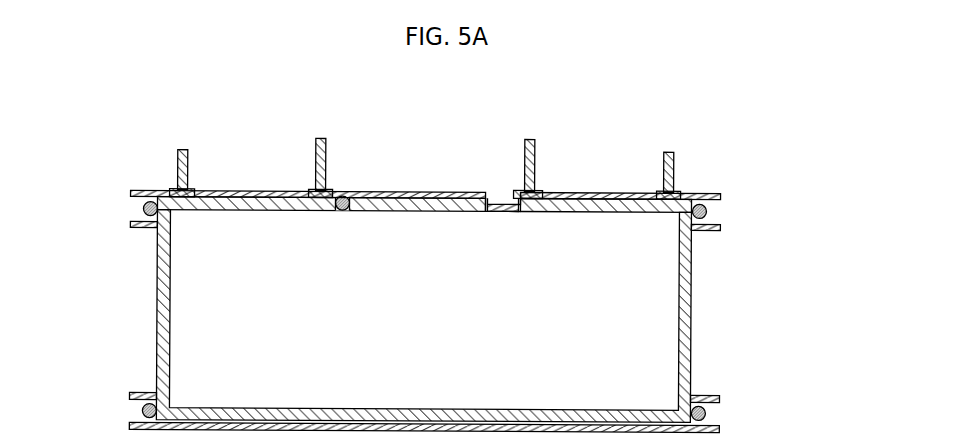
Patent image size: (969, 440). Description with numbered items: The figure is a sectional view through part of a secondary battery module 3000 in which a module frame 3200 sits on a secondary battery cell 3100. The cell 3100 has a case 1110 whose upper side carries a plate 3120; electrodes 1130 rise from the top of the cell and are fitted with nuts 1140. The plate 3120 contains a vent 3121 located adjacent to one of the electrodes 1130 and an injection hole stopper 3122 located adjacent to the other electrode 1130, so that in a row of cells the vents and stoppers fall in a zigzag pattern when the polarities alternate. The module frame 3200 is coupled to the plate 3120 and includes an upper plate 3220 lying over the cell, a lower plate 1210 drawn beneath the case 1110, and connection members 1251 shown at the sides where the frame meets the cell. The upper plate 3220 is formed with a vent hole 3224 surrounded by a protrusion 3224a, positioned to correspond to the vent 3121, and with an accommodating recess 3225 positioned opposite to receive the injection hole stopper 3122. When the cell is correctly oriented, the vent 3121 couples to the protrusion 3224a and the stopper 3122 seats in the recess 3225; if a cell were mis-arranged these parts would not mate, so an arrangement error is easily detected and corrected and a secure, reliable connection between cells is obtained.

The secondary battery module 3000 is at (77, 99).
The secondary battery cell 3100 is at (803, 147).
The case 1110 is at (691, 265).
The electrode 1130 is at (673, 164).
The nut 1140 is at (700, 196).
The bottom plate 1210 is at (130, 426).
The connection member 1251 is at (143, 208).
The plate 3120 is at (705, 209).
The vent 3121 is at (505, 211).
The injection hole stopper 3122 is at (341, 212).
The module frame 3200 is at (128, 180).
The upper plate 3220 is at (130, 194).
The vent hole 3224 is at (493, 203).
The protrusion 3224a is at (499, 201).
The accommodating recess 3225 is at (345, 197).